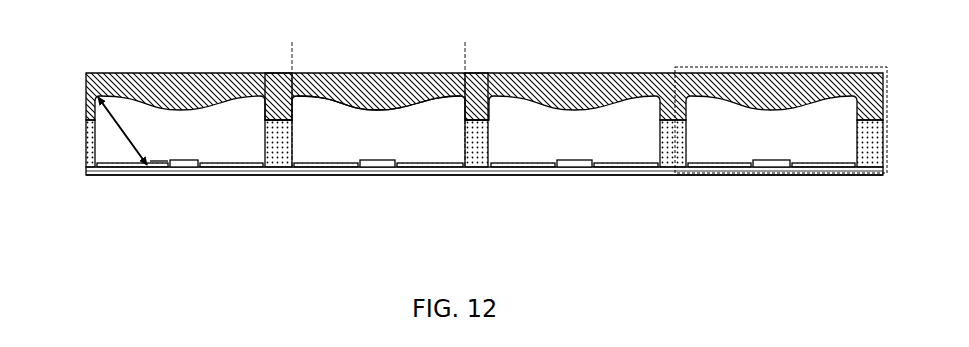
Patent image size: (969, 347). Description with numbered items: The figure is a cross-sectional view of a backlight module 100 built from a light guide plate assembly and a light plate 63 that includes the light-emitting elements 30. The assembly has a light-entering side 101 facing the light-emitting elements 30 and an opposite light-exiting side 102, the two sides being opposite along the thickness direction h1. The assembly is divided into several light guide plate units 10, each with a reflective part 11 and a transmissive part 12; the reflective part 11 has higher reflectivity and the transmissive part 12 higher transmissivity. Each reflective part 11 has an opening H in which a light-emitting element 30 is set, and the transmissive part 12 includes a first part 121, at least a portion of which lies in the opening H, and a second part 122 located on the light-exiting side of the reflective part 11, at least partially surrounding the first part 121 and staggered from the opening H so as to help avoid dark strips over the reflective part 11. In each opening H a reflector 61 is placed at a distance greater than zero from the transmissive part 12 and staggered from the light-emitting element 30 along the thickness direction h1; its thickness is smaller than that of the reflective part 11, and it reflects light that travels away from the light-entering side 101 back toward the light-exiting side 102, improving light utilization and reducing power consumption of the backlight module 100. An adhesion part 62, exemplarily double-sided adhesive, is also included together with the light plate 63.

The backlight module 100 is at (868, 24).
The light-exiting side 102 is at (112, 58).
The light-entering side 101 is at (111, 193).
The transmissive part 12 is at (480, 35).
The first part 121 is at (383, 92).
The second part 122 is at (279, 100).
The light plate 63 is at (281, 170).
The reflector 61 is at (313, 166).
The adhesion part 62 is at (336, 173).
The reflective part 11 is at (477, 168).
The light guide plate unit 10 is at (883, 176).
The light-emitting element 30 is at (184, 169).
The opening H is at (241, 153).
The thickness direction h1 is at (47, 187).